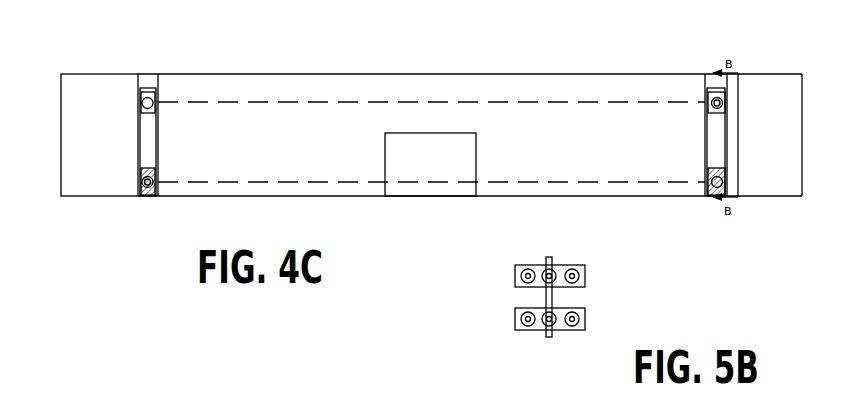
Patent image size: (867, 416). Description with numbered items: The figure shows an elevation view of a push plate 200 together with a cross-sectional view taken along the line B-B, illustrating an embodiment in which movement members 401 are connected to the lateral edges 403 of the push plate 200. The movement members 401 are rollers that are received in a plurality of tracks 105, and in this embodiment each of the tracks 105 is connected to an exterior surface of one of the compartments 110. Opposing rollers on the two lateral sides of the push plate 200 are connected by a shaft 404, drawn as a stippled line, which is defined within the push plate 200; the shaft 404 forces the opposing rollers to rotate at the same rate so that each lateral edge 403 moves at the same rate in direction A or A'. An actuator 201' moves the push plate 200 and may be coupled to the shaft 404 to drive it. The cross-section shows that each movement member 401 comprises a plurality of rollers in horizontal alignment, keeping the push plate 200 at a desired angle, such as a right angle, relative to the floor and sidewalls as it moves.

In FIG. 4C, the tracks 105 is at (149, 81).
In FIG. 4C, the compartments 110 is at (751, 181).
In FIG. 4C, the push plate 200 is at (430, 151).
In FIG. 5B, the push plate 200 is at (545, 260).
In FIG. 4C, the actuator 201' is at (430, 164).
In FIG. 4C, the movement members 401 is at (725, 100).
In FIG. 5B, the movement members 401 is at (571, 272).
In FIG. 4C, the lateral edges 403 is at (702, 142).
In FIG. 4C, the shaft 404 is at (567, 102).